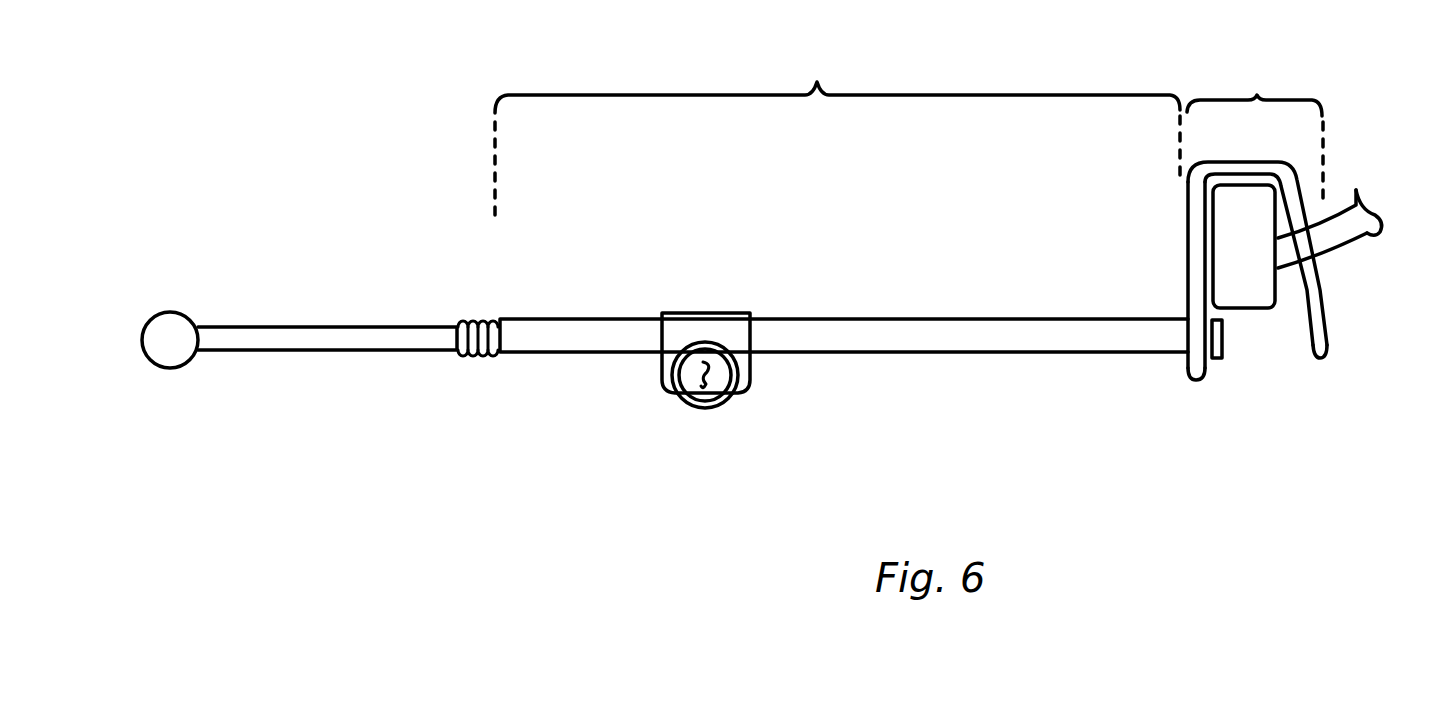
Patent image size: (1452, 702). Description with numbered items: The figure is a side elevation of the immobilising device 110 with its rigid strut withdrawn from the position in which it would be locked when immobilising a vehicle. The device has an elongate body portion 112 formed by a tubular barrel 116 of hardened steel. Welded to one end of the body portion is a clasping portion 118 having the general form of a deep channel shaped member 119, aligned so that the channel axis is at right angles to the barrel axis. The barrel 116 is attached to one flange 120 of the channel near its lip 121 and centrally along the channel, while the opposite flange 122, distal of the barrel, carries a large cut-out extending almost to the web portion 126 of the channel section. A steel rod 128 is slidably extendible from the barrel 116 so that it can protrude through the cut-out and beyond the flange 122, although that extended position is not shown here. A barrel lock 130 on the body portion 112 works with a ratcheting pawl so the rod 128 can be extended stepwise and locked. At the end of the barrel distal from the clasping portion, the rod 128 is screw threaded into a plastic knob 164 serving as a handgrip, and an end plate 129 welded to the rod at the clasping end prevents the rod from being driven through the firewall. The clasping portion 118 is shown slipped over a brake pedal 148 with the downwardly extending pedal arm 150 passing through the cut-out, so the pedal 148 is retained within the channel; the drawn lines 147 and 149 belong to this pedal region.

The immobilising device 110 is at (919, 430).
The elongate body portion 112 is at (837, 135).
The tubular barrel 116 is at (1123, 358).
The clasping portion 118 is at (1283, 118).
The channel shaped member 119 is at (1257, 96).
The flange 120 is at (1168, 330).
The lip 121 is at (1198, 382).
The opposite flange 122 is at (1323, 307).
The web portion 126 is at (1255, 301).
The steel rod 128 is at (325, 352).
The end plate 129 is at (1222, 338).
The barrel lock 130 is at (683, 406).
The strap upper edge 147 is at (1215, 238).
The brake pedal 148 is at (1235, 267).
The strap lower edge 149 is at (1280, 290).
The pedal arm 150 is at (1380, 232).
The plastic knob 164 is at (170, 368).